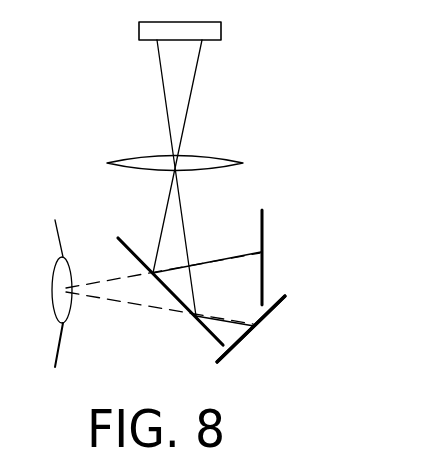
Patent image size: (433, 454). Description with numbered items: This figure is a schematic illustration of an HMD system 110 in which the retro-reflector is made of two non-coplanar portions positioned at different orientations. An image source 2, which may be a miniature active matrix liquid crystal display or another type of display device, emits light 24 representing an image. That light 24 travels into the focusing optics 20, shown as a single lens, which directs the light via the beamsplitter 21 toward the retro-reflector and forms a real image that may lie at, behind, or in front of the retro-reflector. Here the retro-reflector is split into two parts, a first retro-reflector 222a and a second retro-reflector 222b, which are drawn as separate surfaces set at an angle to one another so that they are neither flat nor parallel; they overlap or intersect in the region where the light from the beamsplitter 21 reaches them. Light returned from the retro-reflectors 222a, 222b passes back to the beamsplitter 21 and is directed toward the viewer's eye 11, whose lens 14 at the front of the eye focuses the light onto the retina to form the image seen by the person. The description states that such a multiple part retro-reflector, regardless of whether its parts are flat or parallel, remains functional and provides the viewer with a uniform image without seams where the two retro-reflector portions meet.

The image source 2 is at (139, 26).
The light 24 is at (158, 81).
The focusing optics 20 is at (250, 163).
The beamsplitter 21 is at (124, 236).
The HMD system 110 is at (306, 226).
The retro-reflector 222a is at (264, 272).
The retro-reflector 222b is at (272, 311).
The lens 14 is at (71, 308).
The eye 11 is at (62, 345).